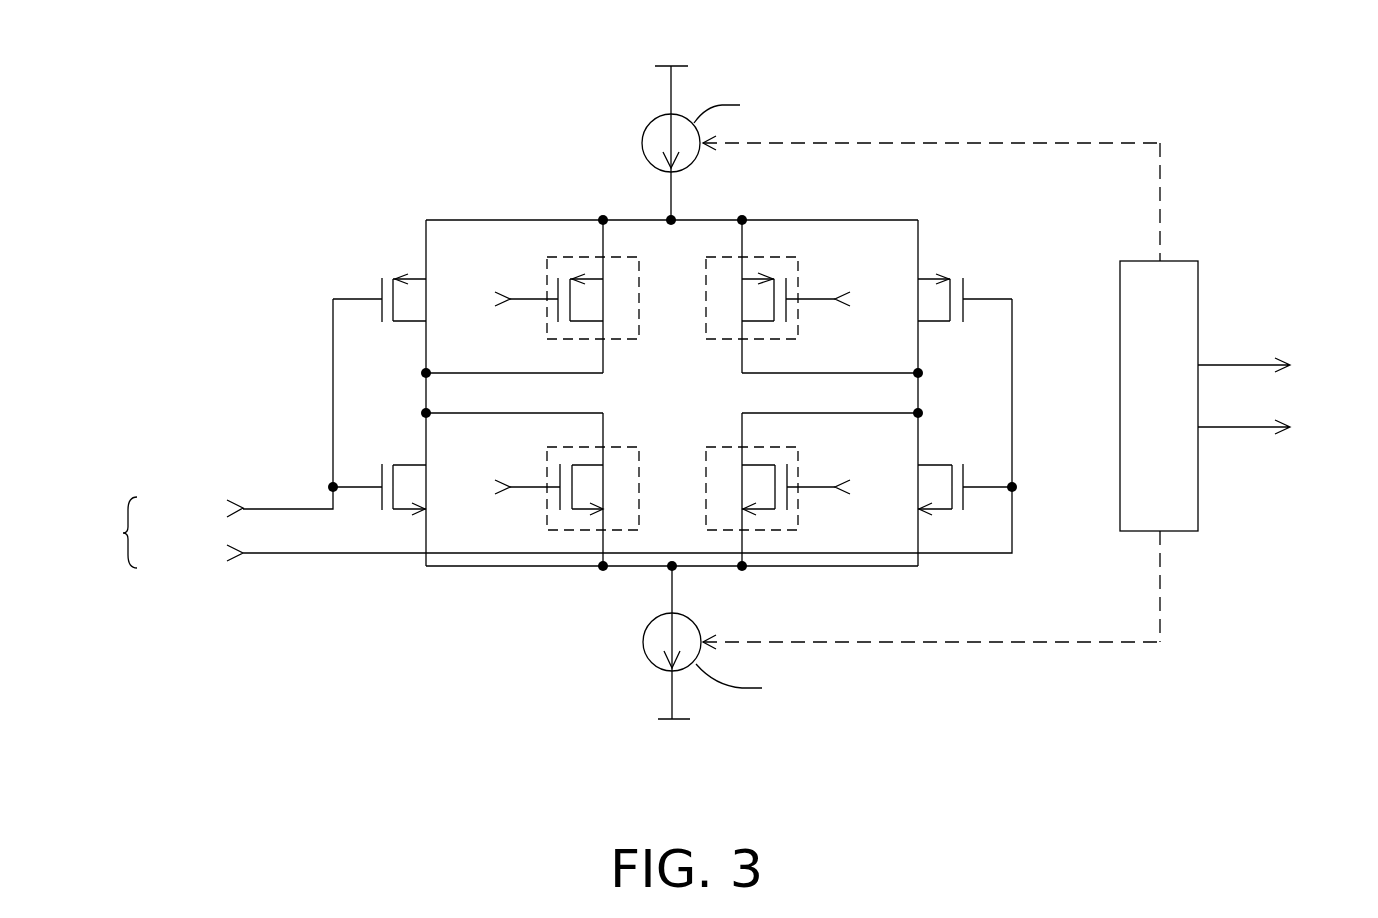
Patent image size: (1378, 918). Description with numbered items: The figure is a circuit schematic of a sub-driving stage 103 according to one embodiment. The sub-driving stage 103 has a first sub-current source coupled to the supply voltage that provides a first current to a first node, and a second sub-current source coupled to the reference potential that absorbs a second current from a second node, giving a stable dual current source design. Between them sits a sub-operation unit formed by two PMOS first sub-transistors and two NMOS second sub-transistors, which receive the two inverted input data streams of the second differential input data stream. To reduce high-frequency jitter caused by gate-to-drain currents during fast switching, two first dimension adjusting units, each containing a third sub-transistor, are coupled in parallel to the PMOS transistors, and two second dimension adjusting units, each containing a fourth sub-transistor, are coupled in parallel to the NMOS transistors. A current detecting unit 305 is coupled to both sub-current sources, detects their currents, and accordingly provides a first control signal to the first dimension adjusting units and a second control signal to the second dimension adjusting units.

The sub-driving stage 103 is at (714, 401).
The current detecting unit 305 is at (1198, 293).